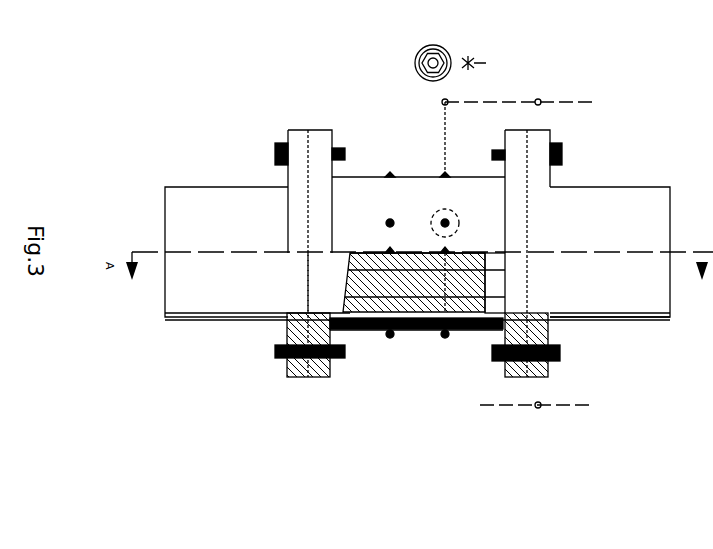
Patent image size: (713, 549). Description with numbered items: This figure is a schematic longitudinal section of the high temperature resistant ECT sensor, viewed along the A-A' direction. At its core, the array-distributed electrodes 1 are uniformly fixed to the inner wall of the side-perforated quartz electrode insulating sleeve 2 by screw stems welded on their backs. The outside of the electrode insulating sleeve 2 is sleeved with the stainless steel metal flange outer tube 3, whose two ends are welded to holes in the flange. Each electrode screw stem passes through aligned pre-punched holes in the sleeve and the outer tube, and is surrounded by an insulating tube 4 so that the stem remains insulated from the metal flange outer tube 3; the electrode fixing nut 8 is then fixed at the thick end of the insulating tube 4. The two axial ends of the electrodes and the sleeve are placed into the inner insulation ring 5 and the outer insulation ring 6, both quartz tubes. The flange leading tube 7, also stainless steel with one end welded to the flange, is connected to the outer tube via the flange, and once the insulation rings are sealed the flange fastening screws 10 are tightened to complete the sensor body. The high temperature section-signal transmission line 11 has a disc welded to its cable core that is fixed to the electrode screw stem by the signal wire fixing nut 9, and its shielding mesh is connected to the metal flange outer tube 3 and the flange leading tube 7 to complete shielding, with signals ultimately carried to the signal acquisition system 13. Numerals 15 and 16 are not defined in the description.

The array-distributed electrode 1 is at (330, 330).
The electrode insulating sleeve 2 is at (350, 330).
The metal flange outer tube 3 is at (362, 330).
The insulating tube 4 is at (455, 212).
The inner insulation ring 5 is at (493, 330).
The outer insulation ring 6 is at (477, 330).
The flange leading tube 7 is at (627, 318).
The electrode fixing nut 8 is at (378, 330).
The signal wire fixing nut 9 is at (390, 338).
The flange fastening screw 10 is at (408, 330).
The high temperature section-signal transmission line 11 is at (445, 338).
The signal acquisition system 13 is at (503, 377).
The nut 15 is at (552, 377).
The bolt 16 is at (548, 377).